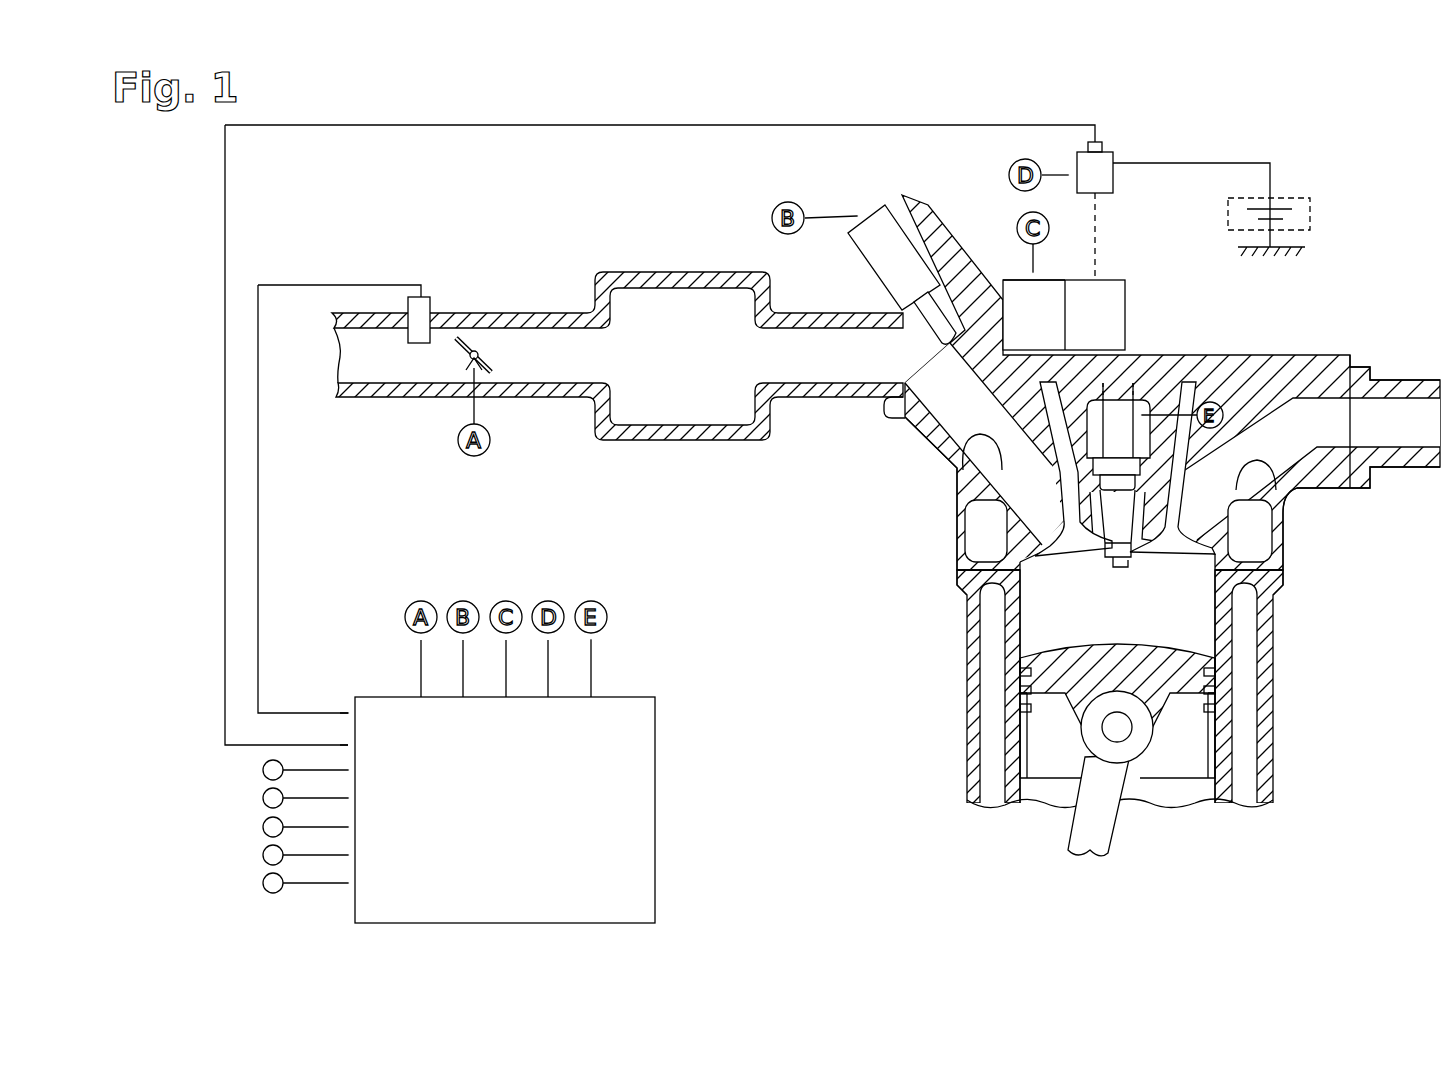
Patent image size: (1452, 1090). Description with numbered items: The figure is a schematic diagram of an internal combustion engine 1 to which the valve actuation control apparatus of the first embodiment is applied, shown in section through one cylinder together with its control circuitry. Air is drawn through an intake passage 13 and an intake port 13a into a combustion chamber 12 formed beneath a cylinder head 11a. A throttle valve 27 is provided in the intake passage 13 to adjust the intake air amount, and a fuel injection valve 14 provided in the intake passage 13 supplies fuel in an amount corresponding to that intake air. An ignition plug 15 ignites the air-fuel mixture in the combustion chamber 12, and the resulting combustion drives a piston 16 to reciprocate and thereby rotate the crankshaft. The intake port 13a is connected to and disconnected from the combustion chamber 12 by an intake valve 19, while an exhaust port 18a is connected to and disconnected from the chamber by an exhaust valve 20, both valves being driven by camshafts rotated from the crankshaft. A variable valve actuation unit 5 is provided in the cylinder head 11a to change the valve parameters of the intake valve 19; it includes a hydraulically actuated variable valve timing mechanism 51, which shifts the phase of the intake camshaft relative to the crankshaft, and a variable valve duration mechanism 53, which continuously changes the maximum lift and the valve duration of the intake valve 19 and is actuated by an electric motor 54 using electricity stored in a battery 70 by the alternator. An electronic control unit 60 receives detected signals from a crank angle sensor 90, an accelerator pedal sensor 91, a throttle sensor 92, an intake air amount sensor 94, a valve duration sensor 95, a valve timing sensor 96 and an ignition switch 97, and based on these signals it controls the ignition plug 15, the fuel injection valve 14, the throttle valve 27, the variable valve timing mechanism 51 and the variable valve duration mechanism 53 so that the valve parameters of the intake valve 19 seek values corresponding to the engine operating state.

The engine 1 is at (1162, 526).
The variable valve actuation unit 5 is at (1081, 282).
The cylinder head 11a is at (1162, 395).
The combustion chamber 12 is at (1165, 740).
The intake passage 13 is at (813, 398).
The intake port 13a is at (955, 480).
The fuel injection valve 14 is at (862, 270).
The ignition plug 15 is at (1120, 570).
The piston 16 is at (1200, 762).
The exhaust port 18a is at (1292, 490).
The intake valve 19 is at (1078, 562).
The exhaust valve 20 is at (1160, 560).
The throttle valve 27 is at (468, 337).
The variable valve timing mechanism 51 is at (1010, 280).
The variable valve duration mechanism 53 is at (1125, 303).
The electric motor 54 is at (1113, 183).
The electronic control unit 60 is at (655, 783).
The battery 70 is at (1310, 213).
The crank angle sensor 90 is at (263, 770).
The accelerator pedal sensor 91 is at (263, 798).
The throttle sensor 92 is at (263, 827).
The intake air amount sensor 94 is at (430, 300).
The valve duration sensor 95 is at (1102, 147).
The valve timing sensor 96 is at (263, 855).
The ignition switch 97 is at (263, 883).